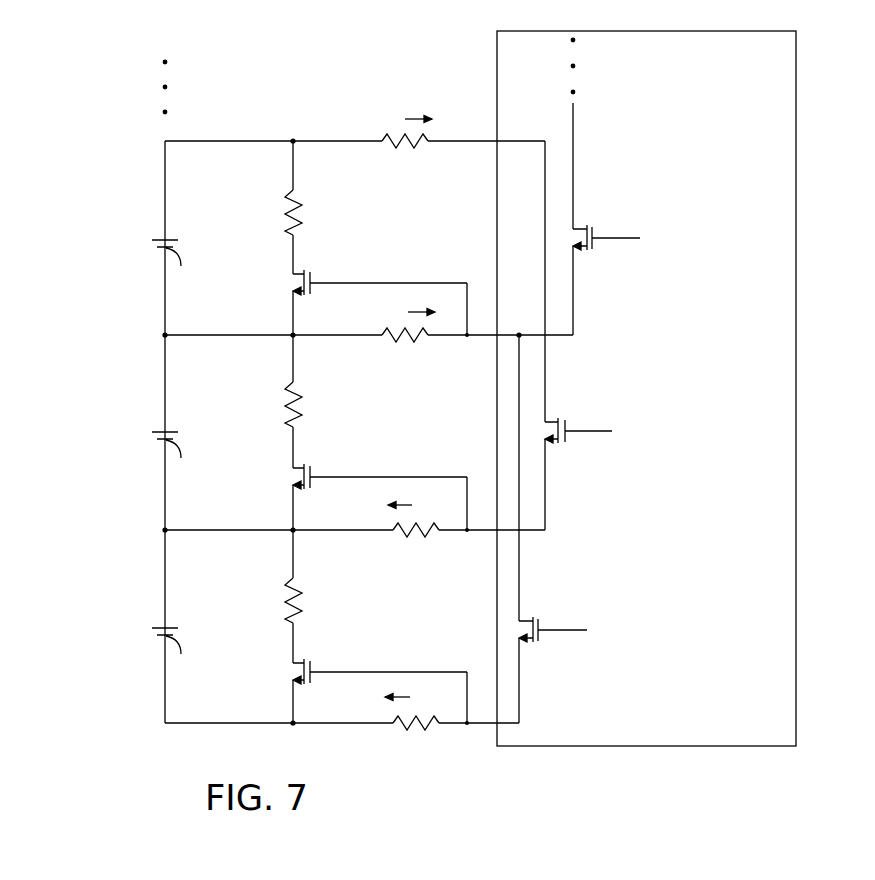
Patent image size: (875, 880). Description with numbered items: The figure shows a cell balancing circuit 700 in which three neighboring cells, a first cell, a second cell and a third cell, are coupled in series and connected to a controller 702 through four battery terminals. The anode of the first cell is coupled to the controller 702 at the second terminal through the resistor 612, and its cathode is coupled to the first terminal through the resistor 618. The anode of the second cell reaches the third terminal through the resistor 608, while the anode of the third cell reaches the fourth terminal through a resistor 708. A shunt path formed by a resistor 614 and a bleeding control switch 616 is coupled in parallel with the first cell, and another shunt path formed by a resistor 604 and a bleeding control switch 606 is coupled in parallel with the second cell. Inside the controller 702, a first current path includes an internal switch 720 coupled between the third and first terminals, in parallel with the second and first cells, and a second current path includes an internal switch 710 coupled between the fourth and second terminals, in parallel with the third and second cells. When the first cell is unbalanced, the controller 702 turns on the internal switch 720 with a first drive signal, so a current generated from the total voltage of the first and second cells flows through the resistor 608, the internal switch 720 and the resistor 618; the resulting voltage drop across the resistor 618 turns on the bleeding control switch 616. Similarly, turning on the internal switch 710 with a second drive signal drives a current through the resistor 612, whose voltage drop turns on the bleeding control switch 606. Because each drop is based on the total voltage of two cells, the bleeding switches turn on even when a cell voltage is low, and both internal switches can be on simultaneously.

The cell balancing circuit 700 is at (138, 135).
The controller 702 is at (796, 68).
The resistor 708 is at (420, 142).
The resistor 608 is at (420, 337).
The resistor 612 is at (433, 531).
The resistor 618 is at (431, 725).
The resistor 604 is at (300, 407).
The bleeding control switch 606 is at (310, 484).
The resistor 614 is at (300, 603).
The bleeding control switch 616 is at (310, 679).
The internal switch 710 is at (567, 424).
The internal switch 720 is at (552, 612).